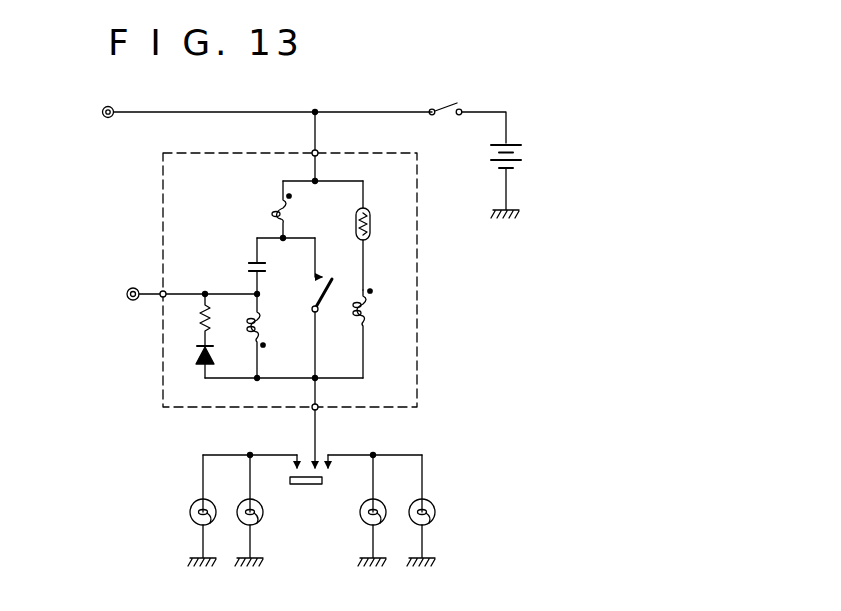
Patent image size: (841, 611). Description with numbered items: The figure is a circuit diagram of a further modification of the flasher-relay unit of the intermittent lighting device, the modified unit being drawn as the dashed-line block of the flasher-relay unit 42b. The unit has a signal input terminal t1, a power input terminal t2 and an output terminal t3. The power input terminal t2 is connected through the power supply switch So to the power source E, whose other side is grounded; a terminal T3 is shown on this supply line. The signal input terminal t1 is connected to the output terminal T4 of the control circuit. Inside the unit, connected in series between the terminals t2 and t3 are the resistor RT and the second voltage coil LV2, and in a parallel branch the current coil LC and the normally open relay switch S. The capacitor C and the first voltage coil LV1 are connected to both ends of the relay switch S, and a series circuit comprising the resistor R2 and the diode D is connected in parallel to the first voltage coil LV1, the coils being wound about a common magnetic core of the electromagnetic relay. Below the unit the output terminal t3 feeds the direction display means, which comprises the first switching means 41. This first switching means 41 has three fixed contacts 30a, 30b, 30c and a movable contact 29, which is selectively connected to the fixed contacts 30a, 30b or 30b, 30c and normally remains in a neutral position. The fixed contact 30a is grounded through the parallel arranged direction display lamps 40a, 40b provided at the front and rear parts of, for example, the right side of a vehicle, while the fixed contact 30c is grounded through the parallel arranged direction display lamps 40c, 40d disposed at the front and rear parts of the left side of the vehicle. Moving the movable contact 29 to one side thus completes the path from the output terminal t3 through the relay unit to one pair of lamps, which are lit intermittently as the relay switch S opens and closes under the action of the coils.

The terminal T3 is at (95, 112).
The output terminal of control circuit T4 is at (138, 288).
The signal input terminal t1 is at (198, 284).
The power input terminal t2 is at (325, 147).
The output terminal t3 is at (325, 405).
The power supply switch So is at (444, 98).
The power source E is at (516, 177).
The current coil LC is at (293, 209).
The resistor RT is at (376, 235).
The capacitor C is at (247, 266).
The relay switch S is at (314, 308).
The resistor R2 is at (216, 319).
The diode D is at (215, 361).
The first voltage coil LV1 is at (271, 336).
The second voltage coil LV2 is at (377, 333).
The control circuit 42b is at (418, 367).
The first switching means 41 is at (252, 436).
The fixed contact 30a is at (296, 462).
The fixed contact 30b is at (327, 462).
The fixed contact 30c is at (331, 476).
The movable contact 29 is at (296, 486).
The direction display lamp 40a is at (192, 531).
The direction display lamp 40b is at (263, 520).
The direction display lamp 40c is at (362, 531).
The direction display lamp 40d is at (435, 520).